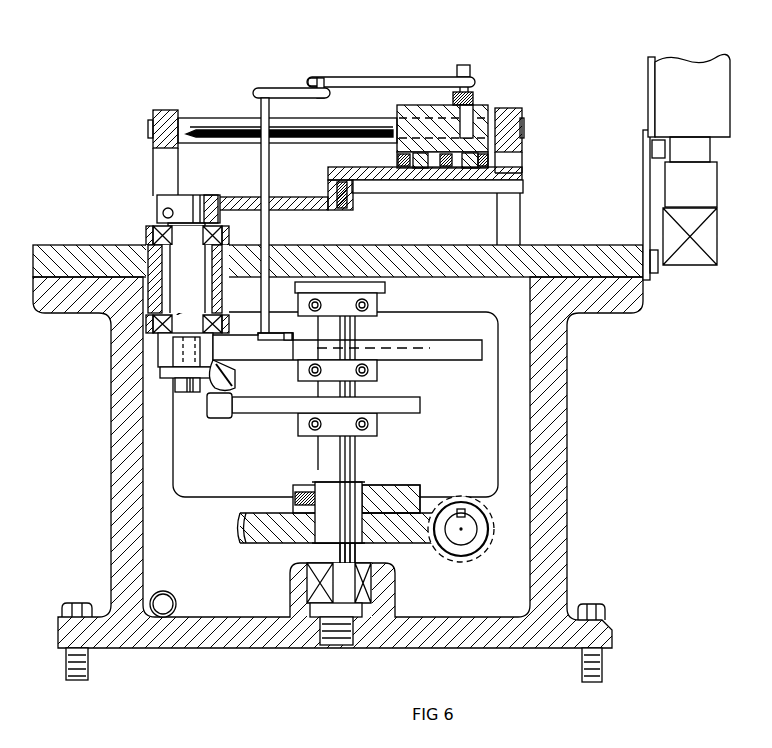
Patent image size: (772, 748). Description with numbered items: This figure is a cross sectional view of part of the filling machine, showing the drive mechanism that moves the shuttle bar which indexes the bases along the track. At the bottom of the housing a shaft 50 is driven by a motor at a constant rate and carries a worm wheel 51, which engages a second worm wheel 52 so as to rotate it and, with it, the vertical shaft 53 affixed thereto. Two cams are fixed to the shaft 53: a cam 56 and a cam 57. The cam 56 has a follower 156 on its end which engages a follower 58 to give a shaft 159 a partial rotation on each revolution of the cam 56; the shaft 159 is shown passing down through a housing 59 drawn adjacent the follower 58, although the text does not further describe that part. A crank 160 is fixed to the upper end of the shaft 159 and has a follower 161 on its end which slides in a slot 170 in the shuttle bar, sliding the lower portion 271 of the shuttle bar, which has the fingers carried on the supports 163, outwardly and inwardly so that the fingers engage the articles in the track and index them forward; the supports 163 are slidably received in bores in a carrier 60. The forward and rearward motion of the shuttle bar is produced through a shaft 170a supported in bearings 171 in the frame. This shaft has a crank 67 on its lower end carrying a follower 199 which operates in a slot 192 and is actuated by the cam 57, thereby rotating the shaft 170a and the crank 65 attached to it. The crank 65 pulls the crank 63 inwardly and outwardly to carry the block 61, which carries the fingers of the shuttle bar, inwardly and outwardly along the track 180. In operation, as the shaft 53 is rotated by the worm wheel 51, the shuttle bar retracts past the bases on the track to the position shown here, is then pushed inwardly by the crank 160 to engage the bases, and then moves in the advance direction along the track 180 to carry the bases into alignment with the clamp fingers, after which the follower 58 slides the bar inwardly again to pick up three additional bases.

The shaft 50 is at (473, 534).
The worm wheel 51 is at (491, 536).
The worm wheel 52 is at (396, 533).
The shaft 53 is at (357, 462).
The cam 56 is at (412, 406).
The cam 57 is at (465, 356).
The follower 58 is at (222, 388).
The nut housing 59 is at (214, 349).
The carrier 60 is at (398, 164).
The block 61 is at (487, 103).
The crank 63 is at (438, 76).
The crank 65 is at (272, 88).
The crank 67 is at (275, 345).
The follower 156 is at (218, 404).
The shaft 159 is at (186, 200).
The crank 160 is at (291, 197).
The follower 161 is at (334, 193).
The supports 163 is at (420, 172).
The slot 170 is at (487, 189).
The shaft 170a is at (270, 156).
The bearings 171 is at (275, 258).
The track 180 is at (348, 124).
The slot 192 is at (412, 341).
The follower 199 is at (288, 344).
The lower portion 271 is at (522, 176).